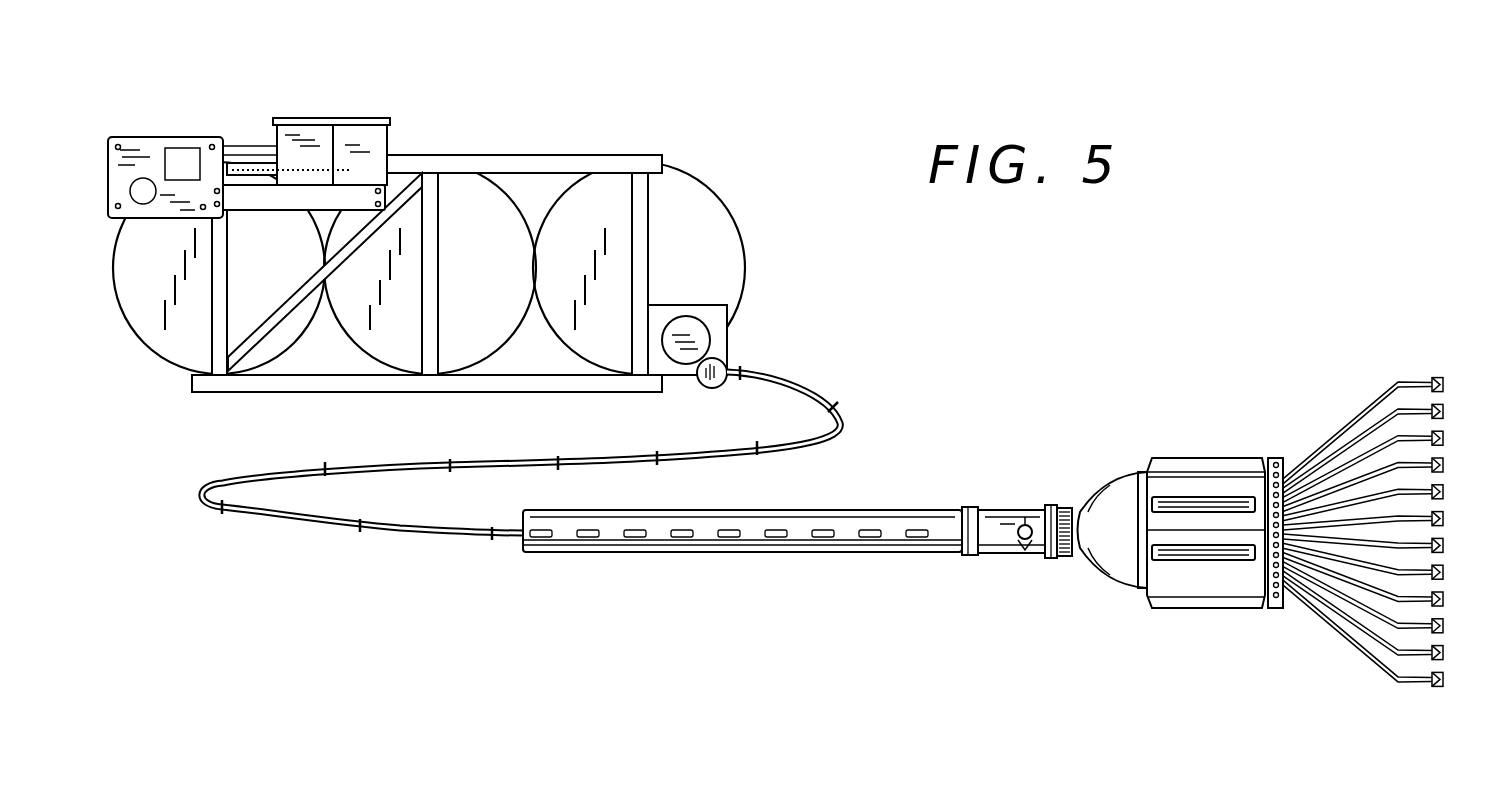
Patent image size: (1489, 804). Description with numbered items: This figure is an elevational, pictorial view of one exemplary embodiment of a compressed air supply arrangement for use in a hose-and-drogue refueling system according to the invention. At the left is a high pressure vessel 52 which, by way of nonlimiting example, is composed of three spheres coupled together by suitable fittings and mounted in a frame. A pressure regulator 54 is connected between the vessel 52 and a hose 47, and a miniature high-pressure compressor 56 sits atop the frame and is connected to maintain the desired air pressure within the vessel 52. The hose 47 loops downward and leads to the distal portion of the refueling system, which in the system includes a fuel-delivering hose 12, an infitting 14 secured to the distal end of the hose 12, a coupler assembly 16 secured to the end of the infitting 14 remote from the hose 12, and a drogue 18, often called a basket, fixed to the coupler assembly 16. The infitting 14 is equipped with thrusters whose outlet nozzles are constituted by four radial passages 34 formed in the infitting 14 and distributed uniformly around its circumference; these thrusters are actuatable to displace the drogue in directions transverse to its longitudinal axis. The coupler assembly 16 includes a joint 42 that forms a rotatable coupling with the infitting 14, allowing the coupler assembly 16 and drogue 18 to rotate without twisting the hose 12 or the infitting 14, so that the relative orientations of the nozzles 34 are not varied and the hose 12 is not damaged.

The hose 12 is at (800, 553).
The infitting 14 is at (998, 555).
The coupler assembly 16 is at (1207, 452).
The drogue 18 is at (1363, 637).
The radial passages 34 is at (1023, 524).
The joint 42 is at (1063, 558).
The hose 47 is at (813, 393).
The high pressure vessel 52 is at (678, 196).
The pressure regulator 54 is at (727, 344).
The miniature high-pressure compressor 56 is at (305, 128).